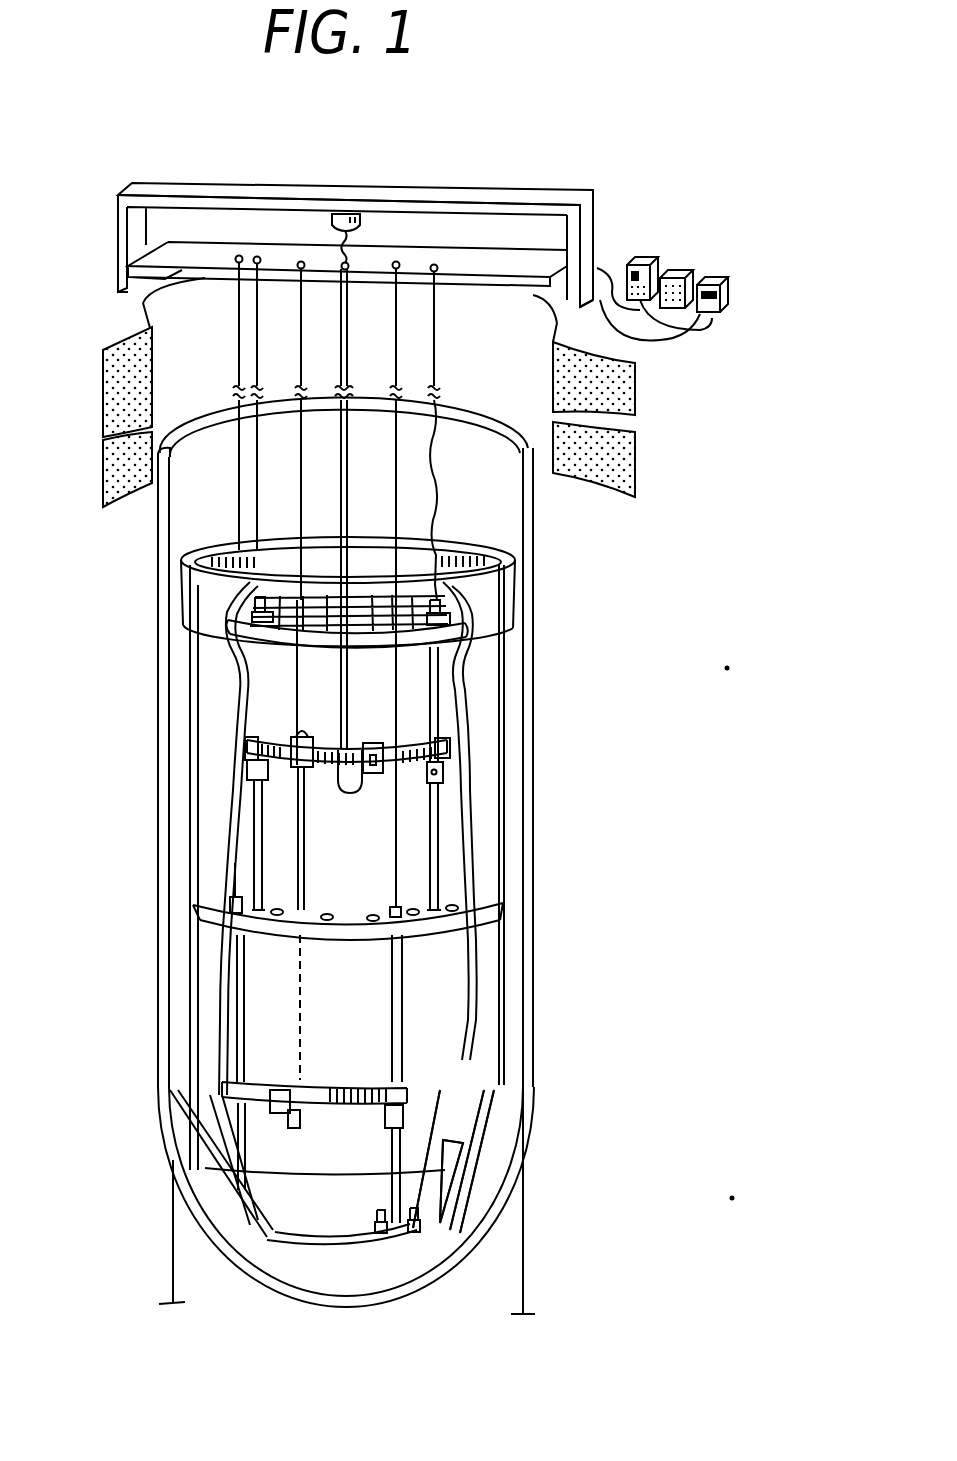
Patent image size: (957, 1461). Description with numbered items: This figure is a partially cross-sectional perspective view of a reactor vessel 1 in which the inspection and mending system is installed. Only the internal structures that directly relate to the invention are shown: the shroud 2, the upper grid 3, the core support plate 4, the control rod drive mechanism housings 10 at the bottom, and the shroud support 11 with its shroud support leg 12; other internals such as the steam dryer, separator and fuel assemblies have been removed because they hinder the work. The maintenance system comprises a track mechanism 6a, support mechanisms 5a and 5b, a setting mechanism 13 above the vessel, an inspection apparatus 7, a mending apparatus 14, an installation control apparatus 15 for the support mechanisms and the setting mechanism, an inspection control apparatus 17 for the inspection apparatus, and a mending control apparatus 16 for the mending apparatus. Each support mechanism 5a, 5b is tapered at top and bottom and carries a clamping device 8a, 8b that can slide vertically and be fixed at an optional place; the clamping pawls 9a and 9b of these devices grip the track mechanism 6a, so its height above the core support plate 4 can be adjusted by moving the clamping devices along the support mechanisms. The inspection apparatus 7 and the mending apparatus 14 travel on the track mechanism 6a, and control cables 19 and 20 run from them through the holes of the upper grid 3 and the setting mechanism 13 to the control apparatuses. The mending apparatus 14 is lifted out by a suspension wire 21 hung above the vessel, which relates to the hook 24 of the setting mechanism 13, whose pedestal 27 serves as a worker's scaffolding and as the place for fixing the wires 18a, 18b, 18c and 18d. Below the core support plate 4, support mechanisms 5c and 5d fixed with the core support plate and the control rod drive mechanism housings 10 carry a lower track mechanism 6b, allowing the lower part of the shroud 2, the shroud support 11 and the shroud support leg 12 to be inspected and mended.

The reactor pressure vessel 1 is at (523, 1148).
The shroud 2 is at (485, 727).
The upper grid 3 is at (283, 652).
The core support plate 4 is at (262, 928).
The support mechanism 5a is at (430, 873).
The support mechanism 5b is at (258, 850).
The support mechanism 5c is at (400, 998).
The support mechanism 5d is at (230, 1023).
The track mechanism 6a is at (405, 743).
The track mechanism 6b is at (363, 1090).
The inspection apparatus 7 is at (245, 808).
The clamping device 8a is at (443, 773).
The clamping device 8b is at (250, 773).
The clamping pawl 9a is at (450, 750).
The clamping pawl 9b is at (250, 747).
The control rod drive mechanism housing 10 is at (400, 1240).
The shroud support 11 is at (467, 1133).
The shroud support leg 12 is at (443, 1180).
The setting mechanism 13 is at (118, 246).
The mending apparatus 14 is at (375, 767).
The installation control apparatus 15 is at (725, 273).
The mending control apparatus 16 is at (680, 262).
The inspection control apparatus 17 is at (647, 250).
The wire 18a is at (435, 357).
The wire 18b is at (262, 340).
The wire 18c is at (380, 330).
The wire 18d is at (237, 353).
The control cable 19 is at (300, 483).
The control cable 20 is at (343, 472).
The suspension wire 21 is at (348, 457).
The hook 24 is at (367, 230).
The pedestal 27 is at (207, 248).